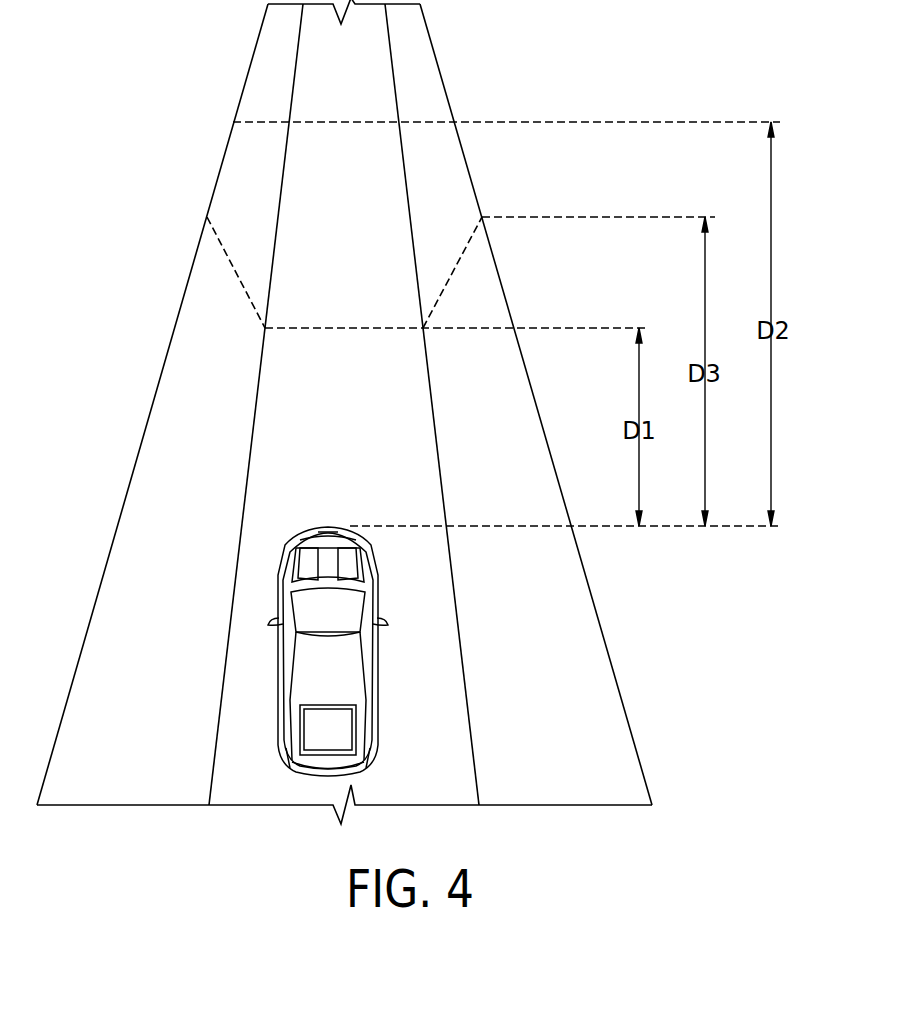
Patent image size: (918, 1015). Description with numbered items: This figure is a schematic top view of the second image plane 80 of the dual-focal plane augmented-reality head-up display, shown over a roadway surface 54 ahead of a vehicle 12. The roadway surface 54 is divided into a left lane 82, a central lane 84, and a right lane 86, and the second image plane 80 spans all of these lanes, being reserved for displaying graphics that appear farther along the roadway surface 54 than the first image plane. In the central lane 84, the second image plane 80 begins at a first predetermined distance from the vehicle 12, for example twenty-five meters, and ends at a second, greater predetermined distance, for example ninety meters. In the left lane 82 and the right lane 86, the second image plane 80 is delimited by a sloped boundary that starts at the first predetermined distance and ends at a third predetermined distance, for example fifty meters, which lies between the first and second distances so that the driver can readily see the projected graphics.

The vehicle 12 is at (342, 678).
The roadway surface 54 is at (310, 422).
The second image plane 80 is at (260, 120).
The left lane 82 is at (175, 475).
The central lane 84 is at (400, 487).
The right lane 86 is at (505, 413).